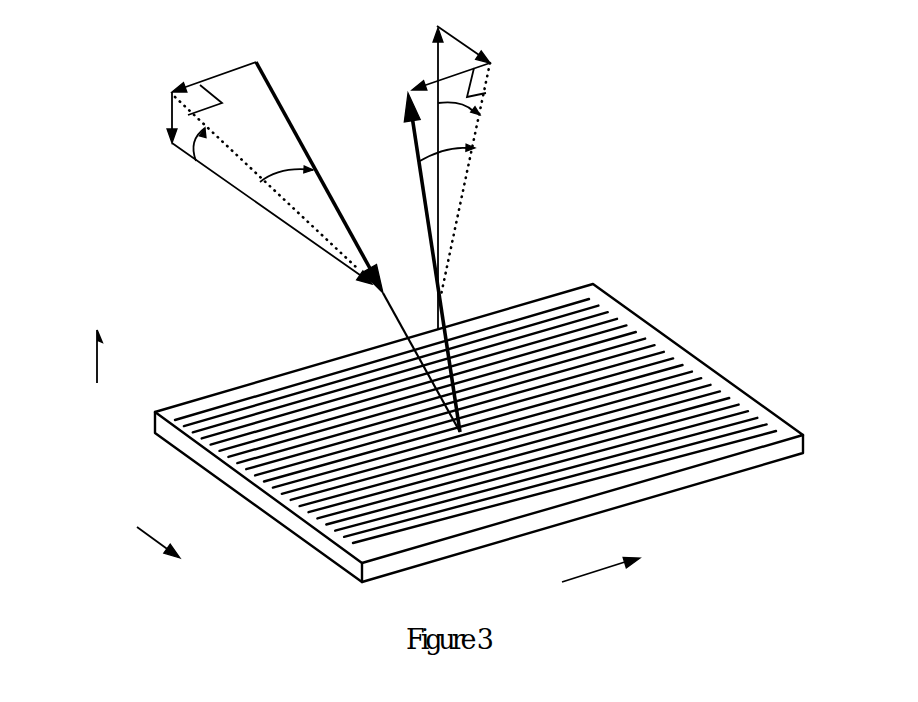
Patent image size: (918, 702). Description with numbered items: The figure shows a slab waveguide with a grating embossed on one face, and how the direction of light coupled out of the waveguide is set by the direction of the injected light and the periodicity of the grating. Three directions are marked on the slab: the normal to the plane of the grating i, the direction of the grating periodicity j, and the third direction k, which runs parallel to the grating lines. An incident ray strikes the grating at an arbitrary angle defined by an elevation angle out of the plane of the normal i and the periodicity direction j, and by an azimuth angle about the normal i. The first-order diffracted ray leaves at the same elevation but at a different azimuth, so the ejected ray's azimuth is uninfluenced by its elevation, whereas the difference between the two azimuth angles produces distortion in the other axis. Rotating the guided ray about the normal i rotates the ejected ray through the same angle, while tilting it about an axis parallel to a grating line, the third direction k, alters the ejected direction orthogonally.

The normal to the plane of the grating i is at (106, 356).
The direction of the grating periodicity j is at (158, 525).
The third direction k is at (601, 585).